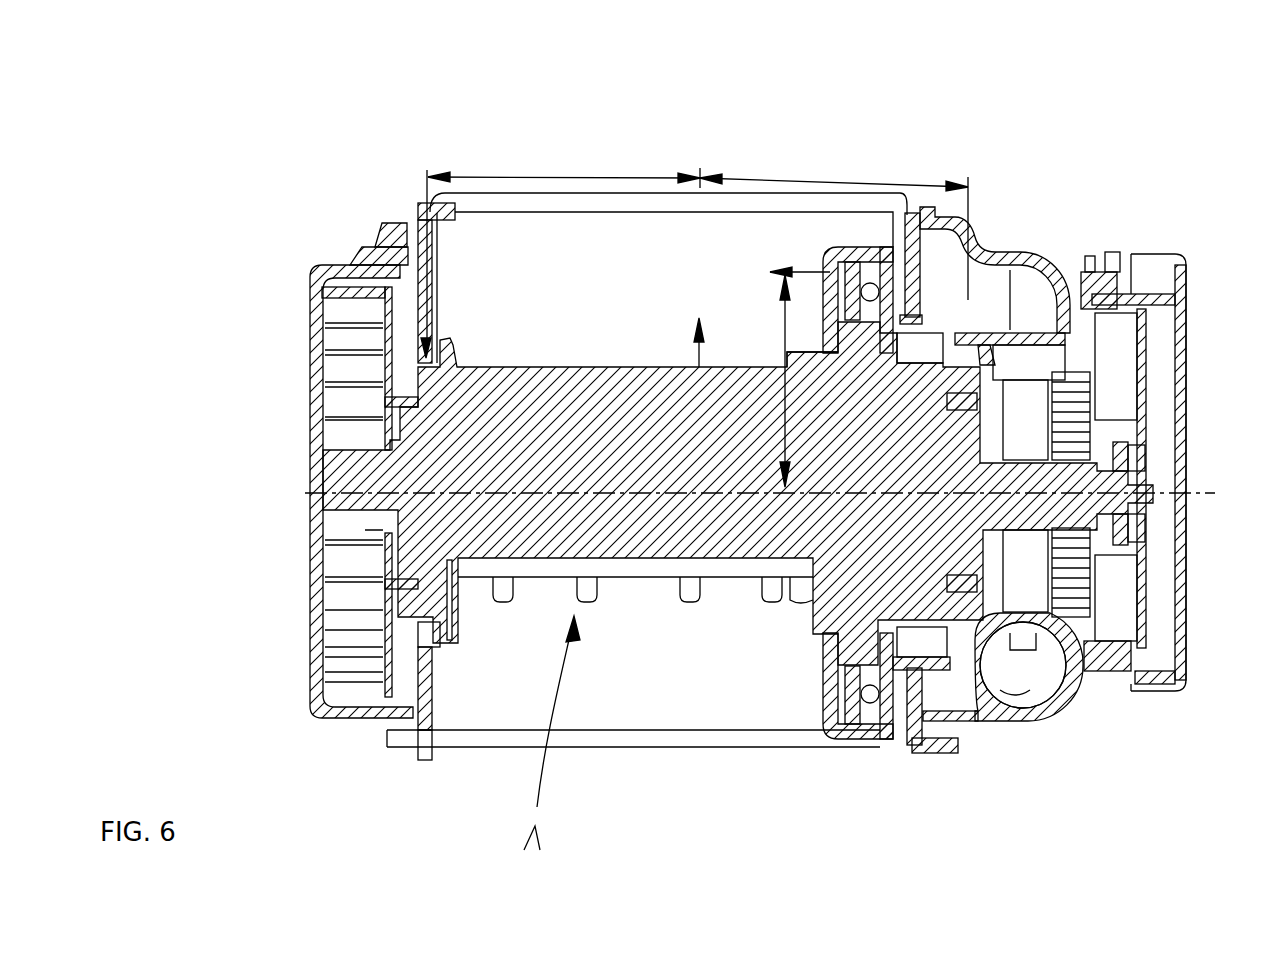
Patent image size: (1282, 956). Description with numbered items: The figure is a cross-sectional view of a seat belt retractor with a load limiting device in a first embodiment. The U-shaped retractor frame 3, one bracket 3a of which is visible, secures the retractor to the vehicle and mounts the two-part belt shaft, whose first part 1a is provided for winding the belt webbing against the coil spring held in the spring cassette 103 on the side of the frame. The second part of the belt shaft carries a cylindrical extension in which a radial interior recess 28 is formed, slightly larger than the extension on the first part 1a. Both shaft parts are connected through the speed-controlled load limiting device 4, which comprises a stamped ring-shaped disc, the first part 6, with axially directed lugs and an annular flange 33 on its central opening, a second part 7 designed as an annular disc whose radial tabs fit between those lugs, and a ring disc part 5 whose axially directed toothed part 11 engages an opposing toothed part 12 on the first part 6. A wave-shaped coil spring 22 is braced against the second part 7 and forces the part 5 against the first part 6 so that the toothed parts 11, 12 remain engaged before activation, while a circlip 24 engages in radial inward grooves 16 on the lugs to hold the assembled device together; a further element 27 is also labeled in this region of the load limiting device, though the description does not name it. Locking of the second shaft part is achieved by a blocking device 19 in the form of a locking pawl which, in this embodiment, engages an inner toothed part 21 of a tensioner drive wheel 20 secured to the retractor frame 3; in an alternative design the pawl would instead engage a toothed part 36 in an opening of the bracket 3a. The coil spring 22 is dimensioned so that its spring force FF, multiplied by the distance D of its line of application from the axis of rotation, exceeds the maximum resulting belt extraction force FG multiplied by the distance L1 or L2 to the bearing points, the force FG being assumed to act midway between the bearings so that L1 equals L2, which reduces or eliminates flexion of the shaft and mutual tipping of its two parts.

The spring cassette 103 is at (340, 322).
The toothed part 36 is at (432, 742).
The first part 1a is at (675, 565).
The radial interior recess 28 is at (797, 577).
The opposing toothed part 12 is at (835, 705).
The toothed part 11 is at (860, 740).
The bearing seal 27 is at (867, 743).
The bracket 3a is at (913, 757).
The retractor frame 3 is at (975, 650).
The inner toothed part 21 is at (1017, 690).
The tensioner drive wheel 20 is at (1013, 667).
The radial inward grooves 16 is at (1055, 660).
The blocking device 19 is at (1077, 423).
The annular flange 33 is at (1085, 326).
The coil spring 22 is at (960, 300).
The second part 7 is at (953, 290).
The circlip 24 is at (900, 290).
The load limiting device 4 is at (870, 237).
The part 5 is at (845, 253).
The first part 6 is at (807, 262).
The distance L1 is at (560, 237).
The distance L2 is at (834, 210).
The resulting belt extraction force FG is at (683, 327).
The spring force FF is at (790, 258).
The distance D is at (777, 353).